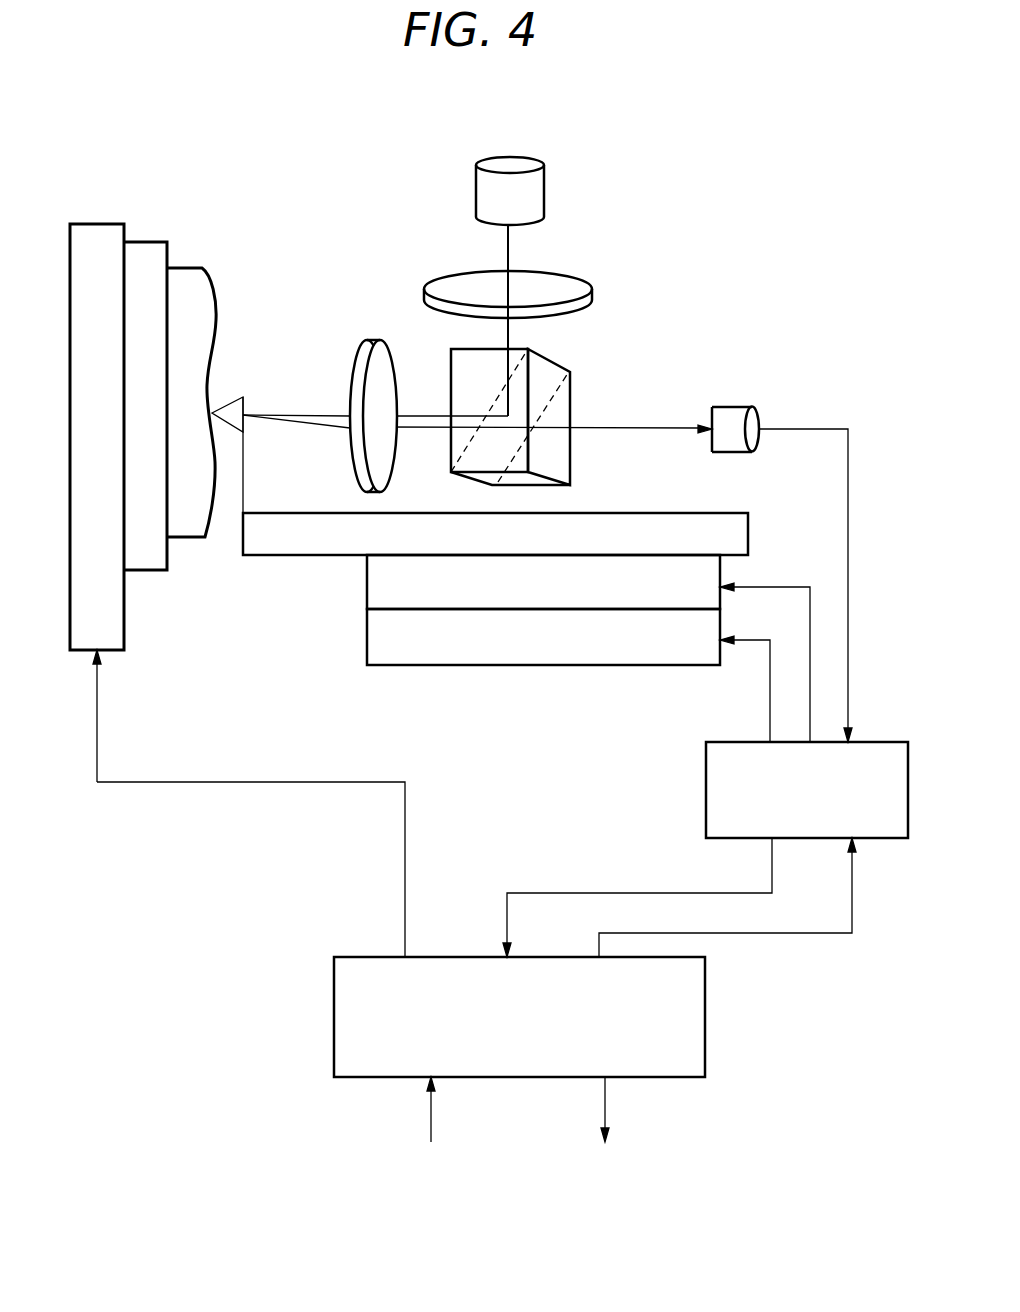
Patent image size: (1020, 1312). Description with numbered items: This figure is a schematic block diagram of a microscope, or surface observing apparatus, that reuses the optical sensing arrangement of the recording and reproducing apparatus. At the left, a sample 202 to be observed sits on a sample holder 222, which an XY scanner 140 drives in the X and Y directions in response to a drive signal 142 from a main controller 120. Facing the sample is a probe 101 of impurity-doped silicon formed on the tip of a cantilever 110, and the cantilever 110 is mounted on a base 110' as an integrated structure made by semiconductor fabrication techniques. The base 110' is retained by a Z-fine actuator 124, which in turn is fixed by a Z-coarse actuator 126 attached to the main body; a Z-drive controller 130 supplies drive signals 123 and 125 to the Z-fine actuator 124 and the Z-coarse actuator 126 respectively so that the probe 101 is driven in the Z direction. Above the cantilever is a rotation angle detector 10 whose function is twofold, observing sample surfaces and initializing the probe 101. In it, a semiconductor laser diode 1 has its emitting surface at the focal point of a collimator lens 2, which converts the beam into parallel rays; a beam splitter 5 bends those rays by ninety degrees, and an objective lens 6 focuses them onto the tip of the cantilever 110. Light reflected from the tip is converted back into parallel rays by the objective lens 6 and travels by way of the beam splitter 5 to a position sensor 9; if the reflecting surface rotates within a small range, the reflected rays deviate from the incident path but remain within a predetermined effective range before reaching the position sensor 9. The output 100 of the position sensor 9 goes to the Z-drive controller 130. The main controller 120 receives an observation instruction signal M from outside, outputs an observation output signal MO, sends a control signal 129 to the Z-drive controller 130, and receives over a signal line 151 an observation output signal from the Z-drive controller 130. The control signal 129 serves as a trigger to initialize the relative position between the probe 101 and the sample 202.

The semiconductor laser diode 1 is at (523, 158).
The collimator lens 2 is at (583, 288).
The beam splitter 5 is at (548, 372).
The objective lens 6 is at (364, 340).
The position sensor 9 is at (728, 410).
The rotation angle detector 10 is at (636, 407).
The output of the position sensor 100 is at (848, 518).
The probe 101 is at (232, 396).
The cantilever 110 is at (219, 506).
The base 110' is at (527, 515).
The main controller 120 is at (706, 1024).
The drive signal 123 is at (772, 582).
The Z-fine actuator 124 is at (590, 600).
The drive signal 125 is at (755, 645).
The Z-coarse actuator 126 is at (447, 650).
The control signal 129 is at (780, 935).
The Z-drive controller 130 is at (706, 783).
The XY scanner 140 is at (123, 637).
The drive signal 142 is at (405, 828).
The signal line 151 is at (585, 891).
The sample 202 is at (192, 267).
The sample holder 222 is at (145, 240).